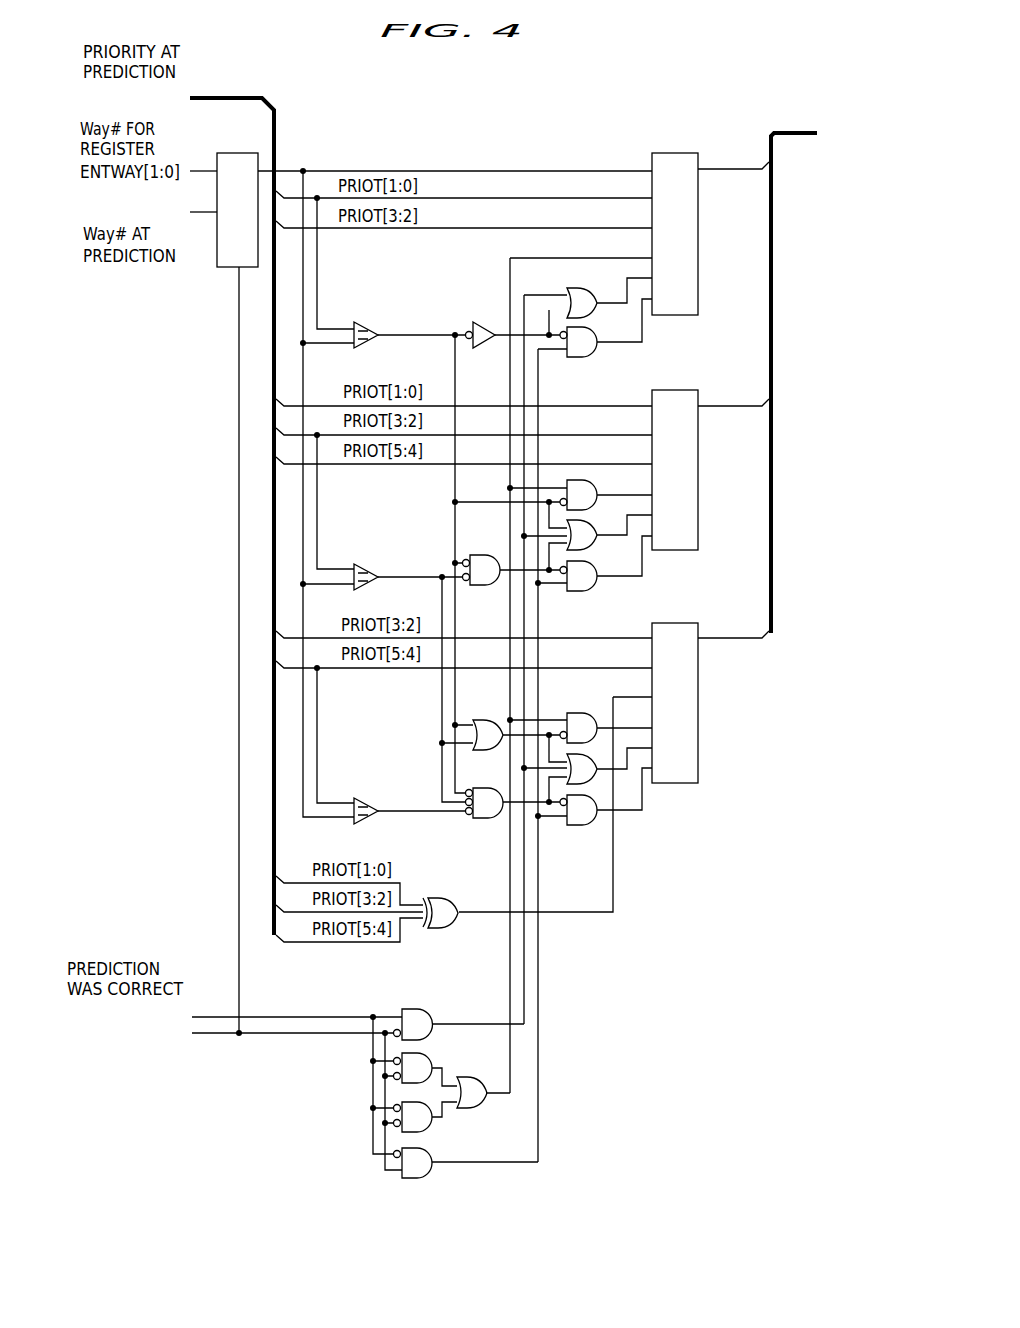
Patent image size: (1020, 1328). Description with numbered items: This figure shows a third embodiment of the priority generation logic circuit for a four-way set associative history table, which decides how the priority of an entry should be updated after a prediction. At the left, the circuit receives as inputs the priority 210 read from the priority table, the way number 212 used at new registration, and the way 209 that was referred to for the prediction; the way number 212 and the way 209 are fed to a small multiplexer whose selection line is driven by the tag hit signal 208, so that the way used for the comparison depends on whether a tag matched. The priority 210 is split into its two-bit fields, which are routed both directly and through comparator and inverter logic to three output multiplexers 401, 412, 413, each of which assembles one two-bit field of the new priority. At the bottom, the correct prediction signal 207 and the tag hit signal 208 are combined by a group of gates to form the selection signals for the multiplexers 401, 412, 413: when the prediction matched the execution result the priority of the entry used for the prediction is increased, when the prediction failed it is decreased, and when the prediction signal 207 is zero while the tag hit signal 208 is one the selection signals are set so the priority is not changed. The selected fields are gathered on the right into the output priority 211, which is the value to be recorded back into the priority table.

The priority 210 is at (205, 94).
The way number 212 is at (195, 165).
The way referred to for a prediction 209 is at (204, 216).
The correct prediction signal 207 is at (205, 1015).
The tag hit signal 208 is at (212, 1047).
The multiplexer 401 is at (700, 149).
The multiplexer 412 is at (700, 386).
The multiplexer 413 is at (700, 623).
The output priority 211 is at (790, 128).